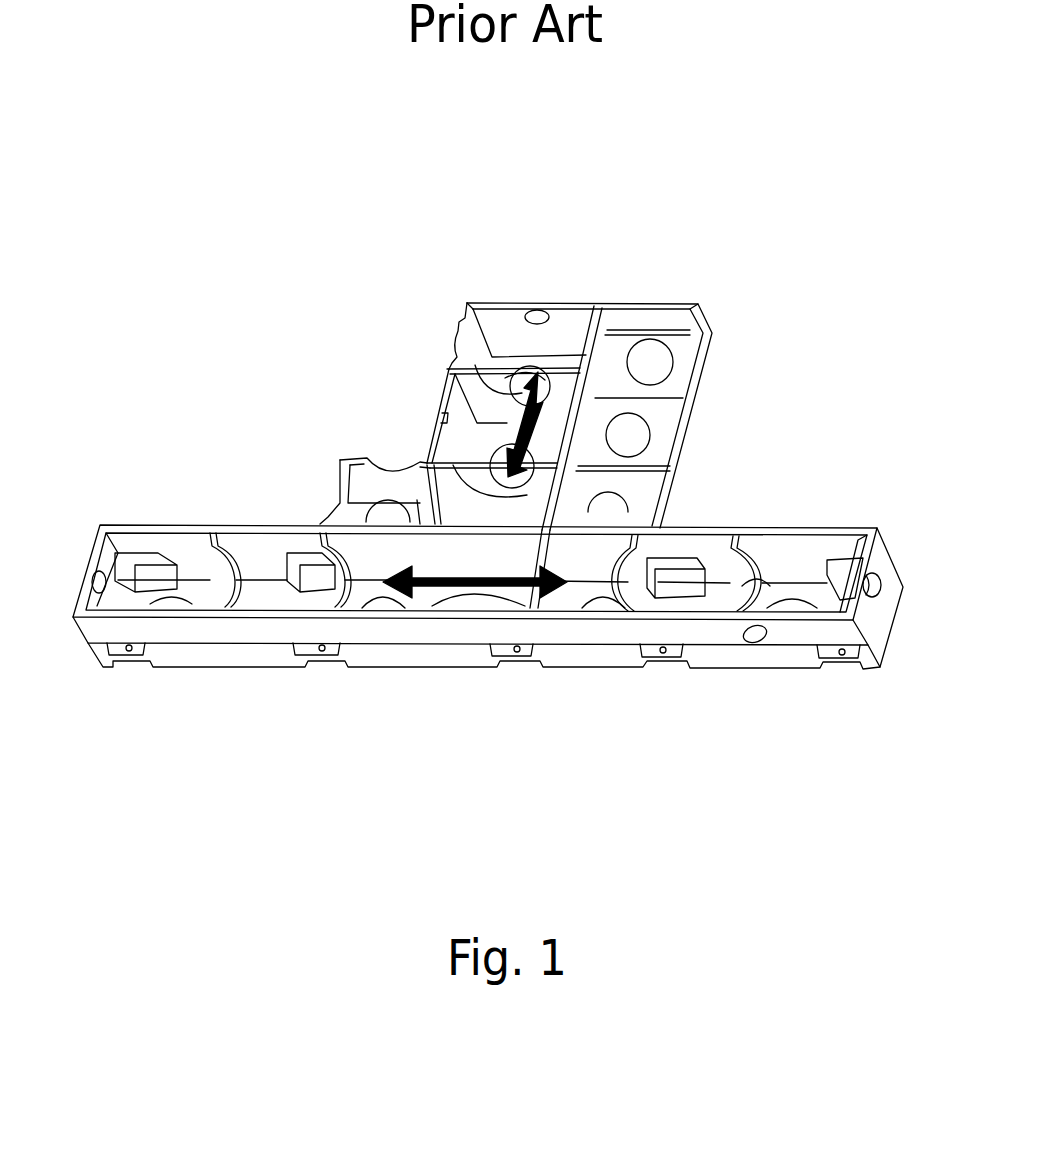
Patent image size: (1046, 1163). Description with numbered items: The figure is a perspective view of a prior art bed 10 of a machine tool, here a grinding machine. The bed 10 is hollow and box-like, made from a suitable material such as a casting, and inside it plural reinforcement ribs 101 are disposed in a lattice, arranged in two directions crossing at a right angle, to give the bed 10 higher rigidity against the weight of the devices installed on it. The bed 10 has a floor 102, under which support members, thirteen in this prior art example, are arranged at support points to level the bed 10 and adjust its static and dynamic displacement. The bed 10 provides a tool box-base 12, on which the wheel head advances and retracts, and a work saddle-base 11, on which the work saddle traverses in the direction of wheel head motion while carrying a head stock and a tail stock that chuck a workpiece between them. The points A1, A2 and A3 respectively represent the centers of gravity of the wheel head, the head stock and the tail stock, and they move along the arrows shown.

The bed 10 is at (695, 278).
The work saddle-base 11 is at (447, 695).
The tool box-base 12 is at (720, 408).
The reinforcement ribs 101 is at (760, 592).
The floor 102 is at (513, 372).
The center of gravity of the wheel head A1 is at (490, 412).
The center of gravity of the head stock A2 is at (268, 576).
The center of gravity of the tail stock A3 is at (692, 585).